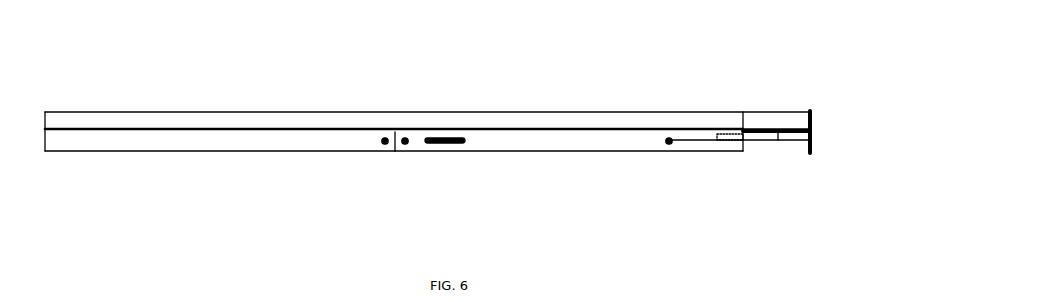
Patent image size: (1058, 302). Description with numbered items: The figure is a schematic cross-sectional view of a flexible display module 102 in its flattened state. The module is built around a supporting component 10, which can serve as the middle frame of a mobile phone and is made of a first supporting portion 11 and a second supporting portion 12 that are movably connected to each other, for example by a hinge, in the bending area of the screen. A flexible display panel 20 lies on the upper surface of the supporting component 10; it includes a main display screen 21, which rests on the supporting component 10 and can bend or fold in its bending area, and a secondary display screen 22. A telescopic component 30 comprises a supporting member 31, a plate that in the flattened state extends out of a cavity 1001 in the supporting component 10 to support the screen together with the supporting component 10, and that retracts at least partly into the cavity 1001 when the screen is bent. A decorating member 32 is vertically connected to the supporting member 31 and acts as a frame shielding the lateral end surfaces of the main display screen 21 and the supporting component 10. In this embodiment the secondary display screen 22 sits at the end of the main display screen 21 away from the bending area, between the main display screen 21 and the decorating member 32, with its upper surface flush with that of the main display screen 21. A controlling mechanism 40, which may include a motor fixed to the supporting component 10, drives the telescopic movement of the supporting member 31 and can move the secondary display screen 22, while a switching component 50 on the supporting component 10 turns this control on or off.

The flexible display module 102 is at (168, 48).
The flexible display panel 20 is at (427, 99).
The main display screen 21 is at (678, 122).
The secondary display screen 22 is at (776, 101).
The supporting component 10 is at (394, 172).
The first supporting portion 11 is at (327, 137).
The second supporting portion 12 is at (569, 155).
The switching component 50 is at (447, 135).
The controlling mechanism 40 is at (666, 143).
The telescopic component 30 is at (813, 121).
The supporting member 31 is at (797, 129).
The decorating member 32 is at (829, 132).
The cavity 1001 is at (729, 135).